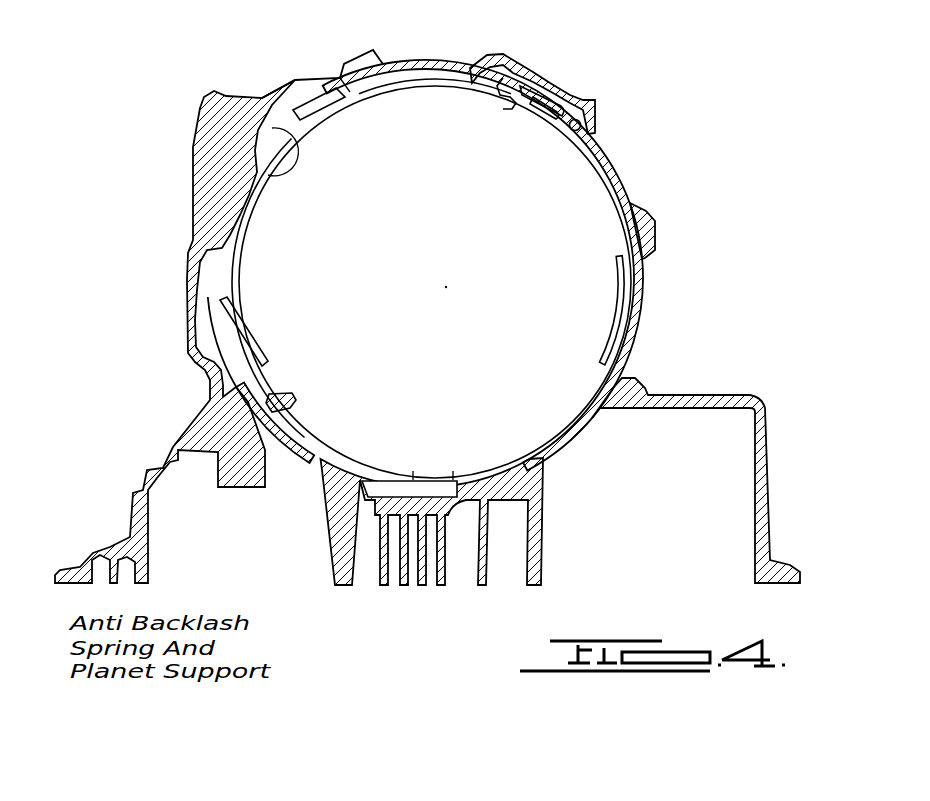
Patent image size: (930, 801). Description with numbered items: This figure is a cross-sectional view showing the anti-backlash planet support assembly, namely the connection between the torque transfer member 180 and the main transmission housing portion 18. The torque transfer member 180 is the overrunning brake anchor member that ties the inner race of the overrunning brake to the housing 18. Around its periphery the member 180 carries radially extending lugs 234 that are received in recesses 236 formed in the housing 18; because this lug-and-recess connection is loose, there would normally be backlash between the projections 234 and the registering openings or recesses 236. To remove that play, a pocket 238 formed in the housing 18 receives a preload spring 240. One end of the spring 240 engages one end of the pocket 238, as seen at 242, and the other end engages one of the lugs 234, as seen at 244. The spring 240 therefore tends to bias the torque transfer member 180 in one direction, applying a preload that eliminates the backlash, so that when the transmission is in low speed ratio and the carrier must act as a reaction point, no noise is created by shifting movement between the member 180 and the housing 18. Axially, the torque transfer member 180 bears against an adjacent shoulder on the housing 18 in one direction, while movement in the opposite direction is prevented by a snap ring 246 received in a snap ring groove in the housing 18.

The main transmission housing portion 18 is at (437, 61).
The torque transfer member 180 is at (453, 84).
The radially extending lugs 234 is at (503, 57).
The recesses 236 is at (642, 233).
The pocket 238 is at (552, 87).
The preload spring 240 is at (562, 100).
The spring end engagement with pocket 242 is at (583, 128).
The spring end engagement with lug 244 is at (513, 102).
The snap ring 246 is at (362, 85).